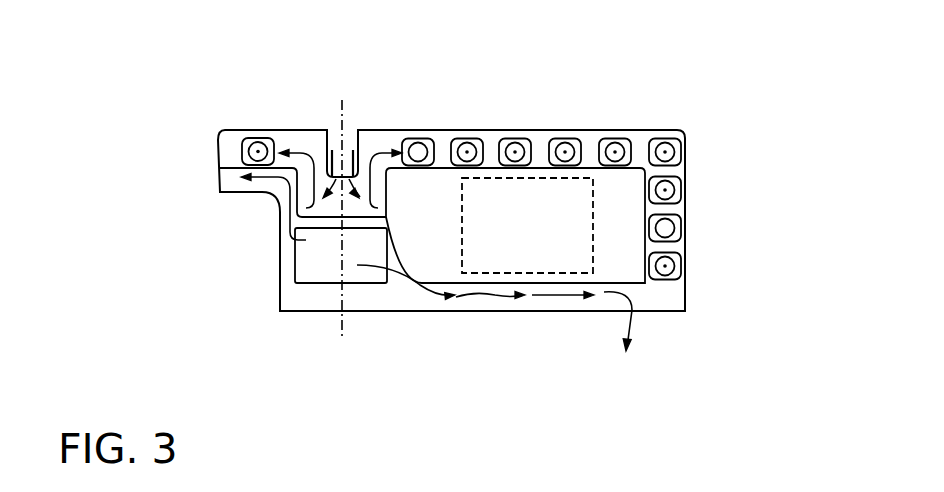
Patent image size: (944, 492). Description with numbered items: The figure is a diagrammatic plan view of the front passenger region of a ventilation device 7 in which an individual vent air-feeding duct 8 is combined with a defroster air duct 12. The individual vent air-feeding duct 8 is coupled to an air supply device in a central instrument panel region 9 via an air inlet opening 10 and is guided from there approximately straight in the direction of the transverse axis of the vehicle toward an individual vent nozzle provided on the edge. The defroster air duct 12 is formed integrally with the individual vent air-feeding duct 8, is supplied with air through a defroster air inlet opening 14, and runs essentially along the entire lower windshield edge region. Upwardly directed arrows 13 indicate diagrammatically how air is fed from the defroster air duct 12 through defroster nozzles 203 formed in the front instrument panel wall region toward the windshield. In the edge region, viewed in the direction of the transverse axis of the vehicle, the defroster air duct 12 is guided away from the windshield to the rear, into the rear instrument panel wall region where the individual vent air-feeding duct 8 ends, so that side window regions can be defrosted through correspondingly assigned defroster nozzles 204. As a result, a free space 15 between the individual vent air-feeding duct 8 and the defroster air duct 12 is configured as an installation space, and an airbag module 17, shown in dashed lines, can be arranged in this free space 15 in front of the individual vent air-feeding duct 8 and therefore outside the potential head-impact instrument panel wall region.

The ventilation device 7 is at (596, 104).
The individual vent air-feeding duct 8 is at (531, 297).
The central instrument panel region 9 is at (325, 309).
The air inlet opening 10 is at (308, 274).
The defroster air duct 12 is at (681, 138).
The upwardly directed arrows 13 is at (420, 150).
The defroster air inlet opening 14 is at (354, 171).
The free space 15 is at (606, 240).
The airbag module 17 is at (549, 275).
The defroster nozzles 203 is at (470, 138).
The defroster nozzles 204 is at (688, 268).